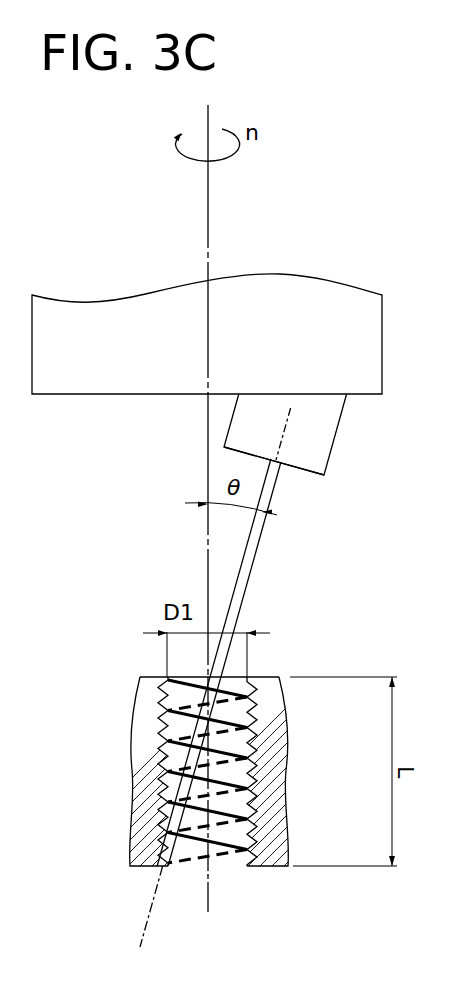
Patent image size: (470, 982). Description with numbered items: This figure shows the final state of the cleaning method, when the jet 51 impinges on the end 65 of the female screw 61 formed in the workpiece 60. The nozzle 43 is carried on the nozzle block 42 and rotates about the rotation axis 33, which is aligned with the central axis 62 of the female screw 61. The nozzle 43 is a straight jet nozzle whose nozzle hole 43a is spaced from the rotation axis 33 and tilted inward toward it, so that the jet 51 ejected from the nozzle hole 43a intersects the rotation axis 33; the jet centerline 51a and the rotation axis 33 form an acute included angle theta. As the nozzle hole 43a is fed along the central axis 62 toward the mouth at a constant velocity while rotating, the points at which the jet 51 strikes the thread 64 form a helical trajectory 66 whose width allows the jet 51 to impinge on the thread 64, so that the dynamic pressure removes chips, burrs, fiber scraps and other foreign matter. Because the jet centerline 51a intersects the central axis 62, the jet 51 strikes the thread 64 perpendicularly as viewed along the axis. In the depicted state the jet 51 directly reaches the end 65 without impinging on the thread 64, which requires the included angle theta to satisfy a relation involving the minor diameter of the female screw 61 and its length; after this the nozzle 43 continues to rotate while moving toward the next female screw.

The rotation axis 33 is at (208, 220).
The nozzle block 42 is at (383, 310).
The nozzle 43 is at (337, 439).
The nozzle hole 43a is at (283, 466).
The jet 51 is at (258, 545).
The jet centerline 51a is at (148, 921).
The workpiece 60 is at (288, 734).
The female screw 61 is at (160, 801).
The central axis 62 is at (208, 902).
The thread 64 is at (255, 803).
The end 65 is at (168, 866).
The helical trajectory 66 is at (181, 738).